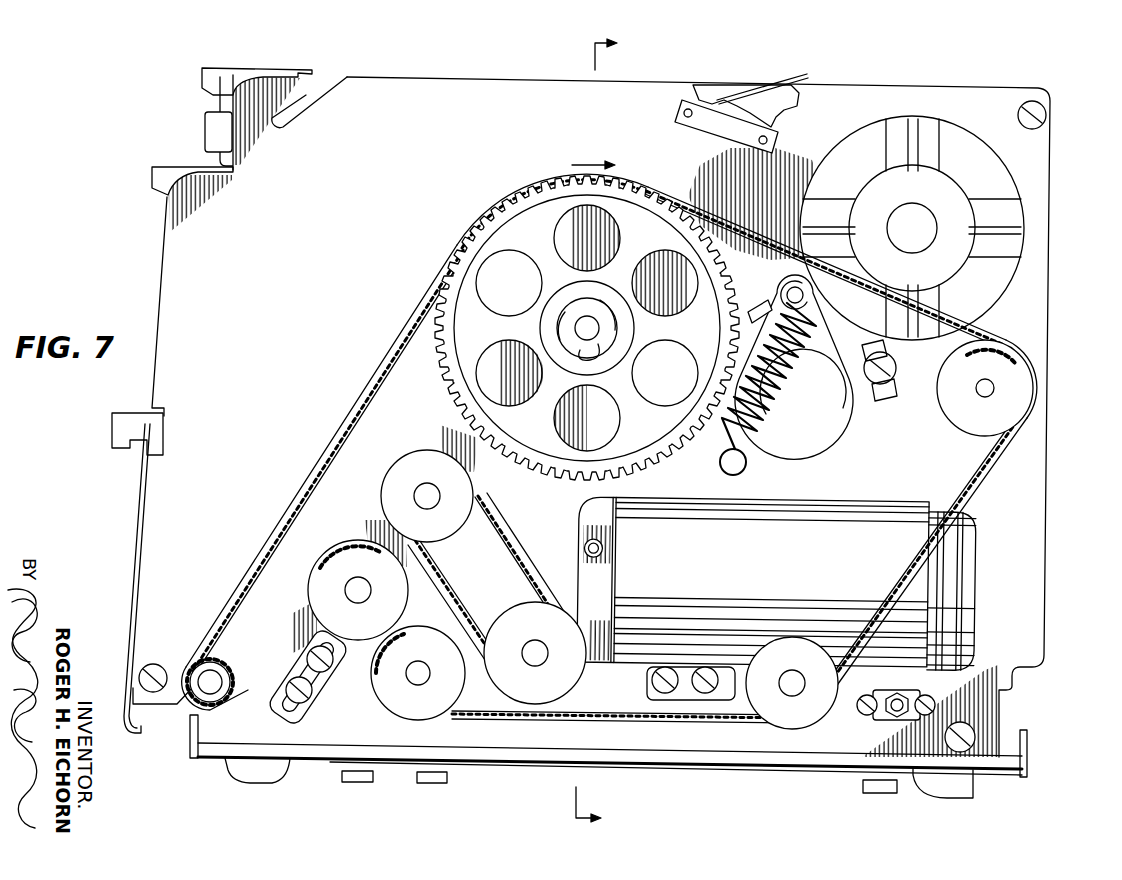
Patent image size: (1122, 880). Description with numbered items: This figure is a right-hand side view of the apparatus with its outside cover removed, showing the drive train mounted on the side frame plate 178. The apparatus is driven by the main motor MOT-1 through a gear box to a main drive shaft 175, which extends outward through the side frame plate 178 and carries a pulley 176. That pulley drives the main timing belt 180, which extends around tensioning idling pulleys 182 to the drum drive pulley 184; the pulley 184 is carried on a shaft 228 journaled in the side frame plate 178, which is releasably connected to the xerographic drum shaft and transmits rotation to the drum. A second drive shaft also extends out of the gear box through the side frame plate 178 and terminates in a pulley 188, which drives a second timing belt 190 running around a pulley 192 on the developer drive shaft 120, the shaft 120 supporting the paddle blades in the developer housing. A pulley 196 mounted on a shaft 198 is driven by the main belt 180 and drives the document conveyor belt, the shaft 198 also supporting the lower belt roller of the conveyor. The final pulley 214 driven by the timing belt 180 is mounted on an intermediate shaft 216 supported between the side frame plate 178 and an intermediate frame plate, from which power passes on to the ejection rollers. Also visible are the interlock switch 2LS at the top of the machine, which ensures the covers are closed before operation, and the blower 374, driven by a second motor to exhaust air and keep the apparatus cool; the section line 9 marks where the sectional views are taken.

The section line 9- 9 is at (605, 431).
The interlock switch 2LS is at (785, 116).
The blower 374 is at (942, 162).
The side frame plate 178 is at (1050, 243).
The timing belt 180 is at (437, 302).
The drum drive pulley 184 is at (447, 392).
The shaft 228 is at (603, 358).
The intermediate shaft 216 is at (994, 386).
The final pulley 214 is at (1030, 406).
The pulley 192 is at (400, 462).
The developer drive shaft 120 is at (437, 477).
The timing belt 190 is at (503, 539).
The tensioning idling pulleys 182 is at (313, 580).
The pulley 188 is at (507, 627).
The shaft 198 is at (197, 668).
The pulley 196 is at (225, 660).
The main drive shaft 175 is at (430, 674).
The pulley 176 is at (430, 716).
The motor MOT-1 is at (795, 522).